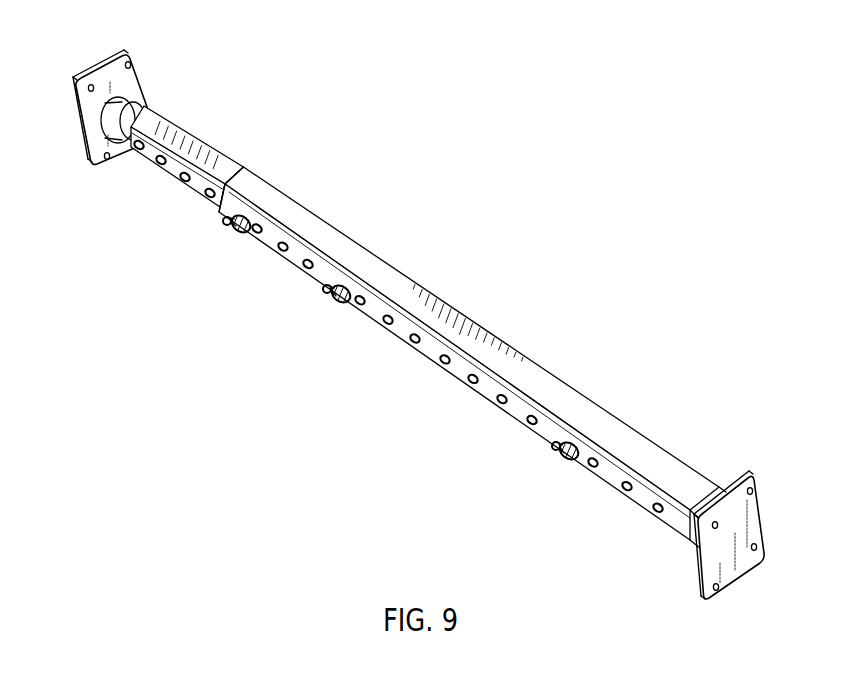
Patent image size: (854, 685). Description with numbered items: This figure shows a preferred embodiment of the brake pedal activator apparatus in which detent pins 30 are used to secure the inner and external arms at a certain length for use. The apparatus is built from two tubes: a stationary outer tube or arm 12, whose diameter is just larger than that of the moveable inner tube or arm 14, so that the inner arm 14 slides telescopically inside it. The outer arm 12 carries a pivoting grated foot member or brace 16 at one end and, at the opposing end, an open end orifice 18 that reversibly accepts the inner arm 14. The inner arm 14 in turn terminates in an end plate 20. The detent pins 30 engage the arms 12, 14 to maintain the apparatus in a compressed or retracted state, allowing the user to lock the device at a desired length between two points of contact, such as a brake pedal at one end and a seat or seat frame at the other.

The outer tube or arm 12 is at (648, 450).
The inner tube or arm 14 is at (177, 134).
The foot member or brace 16 is at (756, 514).
The open end orifice 18 is at (228, 172).
The mounting plate 20 is at (100, 68).
The detent pins 30 is at (229, 238).